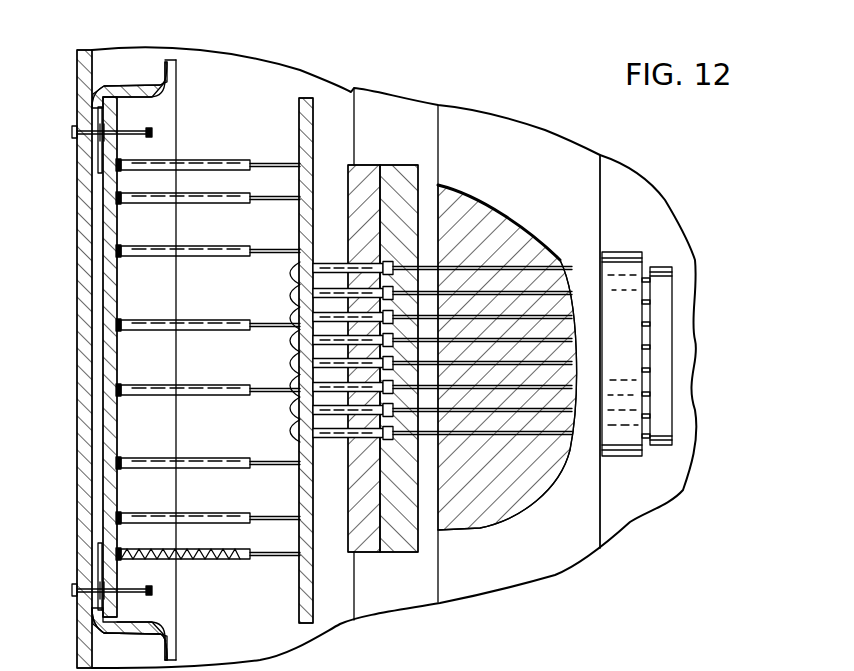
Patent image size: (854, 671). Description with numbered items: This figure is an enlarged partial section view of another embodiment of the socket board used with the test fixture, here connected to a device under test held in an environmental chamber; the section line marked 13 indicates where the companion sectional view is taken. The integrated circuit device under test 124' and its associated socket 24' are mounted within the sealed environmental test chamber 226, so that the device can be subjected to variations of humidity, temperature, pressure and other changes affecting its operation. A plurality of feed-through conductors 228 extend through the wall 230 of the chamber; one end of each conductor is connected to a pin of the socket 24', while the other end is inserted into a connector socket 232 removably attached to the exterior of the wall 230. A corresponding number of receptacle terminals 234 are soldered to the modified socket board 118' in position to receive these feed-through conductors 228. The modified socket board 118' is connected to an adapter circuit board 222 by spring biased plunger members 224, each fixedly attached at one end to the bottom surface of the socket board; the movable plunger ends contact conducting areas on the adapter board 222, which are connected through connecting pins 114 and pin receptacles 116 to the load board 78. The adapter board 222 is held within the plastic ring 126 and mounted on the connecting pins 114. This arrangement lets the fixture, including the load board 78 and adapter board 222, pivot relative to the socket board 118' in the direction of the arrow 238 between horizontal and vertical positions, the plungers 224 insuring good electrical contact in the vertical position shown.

The arrow 238 is at (44, 25).
The load board 78 is at (78, 81).
The section line 13- 13 is at (272, 92).
The connecting pins 114 is at (90, 597).
The pin receptacles 116 is at (140, 592).
The plastic ring 126 is at (153, 638).
The adapter circuit board 222 is at (118, 227).
The spring biased plunger members 224 is at (218, 560).
The modified socket board 118' is at (330, 360).
The receptacle terminals 234 is at (310, 438).
The connector socket 232 is at (399, 540).
The feed-through conductors 228 is at (560, 260).
The wall 230 is at (582, 167).
The socket 24' is at (630, 338).
The integrated circuit device under test 124' is at (696, 354).
The environmental test chamber 226 is at (636, 470).